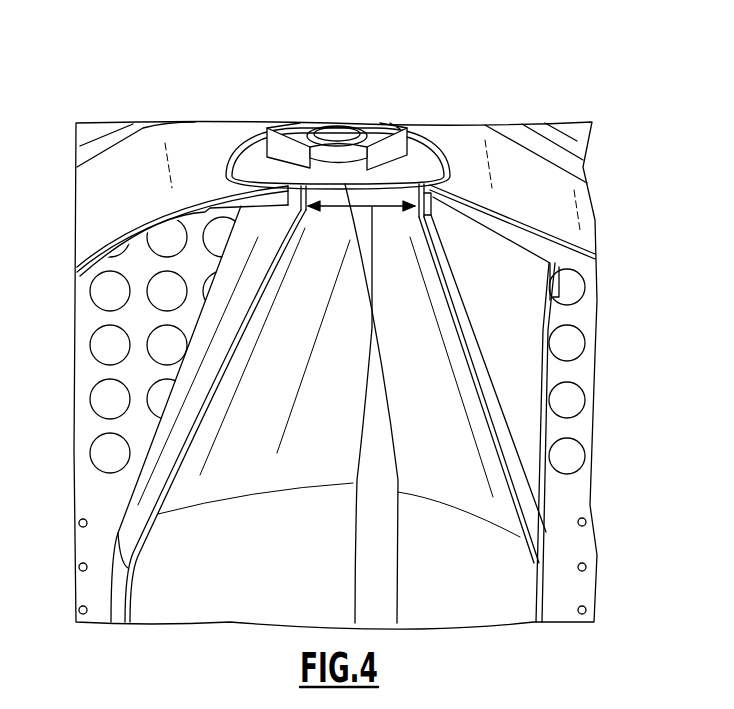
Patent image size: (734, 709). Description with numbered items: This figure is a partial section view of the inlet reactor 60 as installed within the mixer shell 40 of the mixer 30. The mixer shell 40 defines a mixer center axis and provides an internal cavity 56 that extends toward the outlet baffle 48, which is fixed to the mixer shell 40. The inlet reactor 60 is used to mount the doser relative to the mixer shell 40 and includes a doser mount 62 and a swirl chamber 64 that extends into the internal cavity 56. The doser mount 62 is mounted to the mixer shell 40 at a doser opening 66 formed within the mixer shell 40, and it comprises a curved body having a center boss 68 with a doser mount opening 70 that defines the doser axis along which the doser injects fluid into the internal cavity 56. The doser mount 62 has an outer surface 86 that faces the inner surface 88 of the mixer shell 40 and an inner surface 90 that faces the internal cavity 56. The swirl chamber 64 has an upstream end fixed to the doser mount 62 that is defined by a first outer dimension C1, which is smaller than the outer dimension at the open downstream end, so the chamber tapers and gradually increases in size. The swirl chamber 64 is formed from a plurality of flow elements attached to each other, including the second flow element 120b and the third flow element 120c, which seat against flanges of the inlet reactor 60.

The mixer 30 is at (514, 94).
The mixer shell 40 is at (130, 172).
The outlet baffle 48 is at (580, 372).
The internal cavity 56 is at (86, 497).
The inlet reactor 60 is at (381, 121).
The doser mount 62 is at (307, 135).
The swirl chamber 64 is at (113, 622).
The doser opening 66 is at (220, 180).
The center boss 68 is at (313, 130).
The doser mount opening 70 is at (340, 128).
The outer surface 86 is at (416, 170).
The inner surface 88 is at (165, 229).
The inner surface 90 is at (473, 238).
The second flow element 120b is at (437, 403).
The third flow element 120c is at (300, 400).
The first outer dimension C1 is at (368, 214).